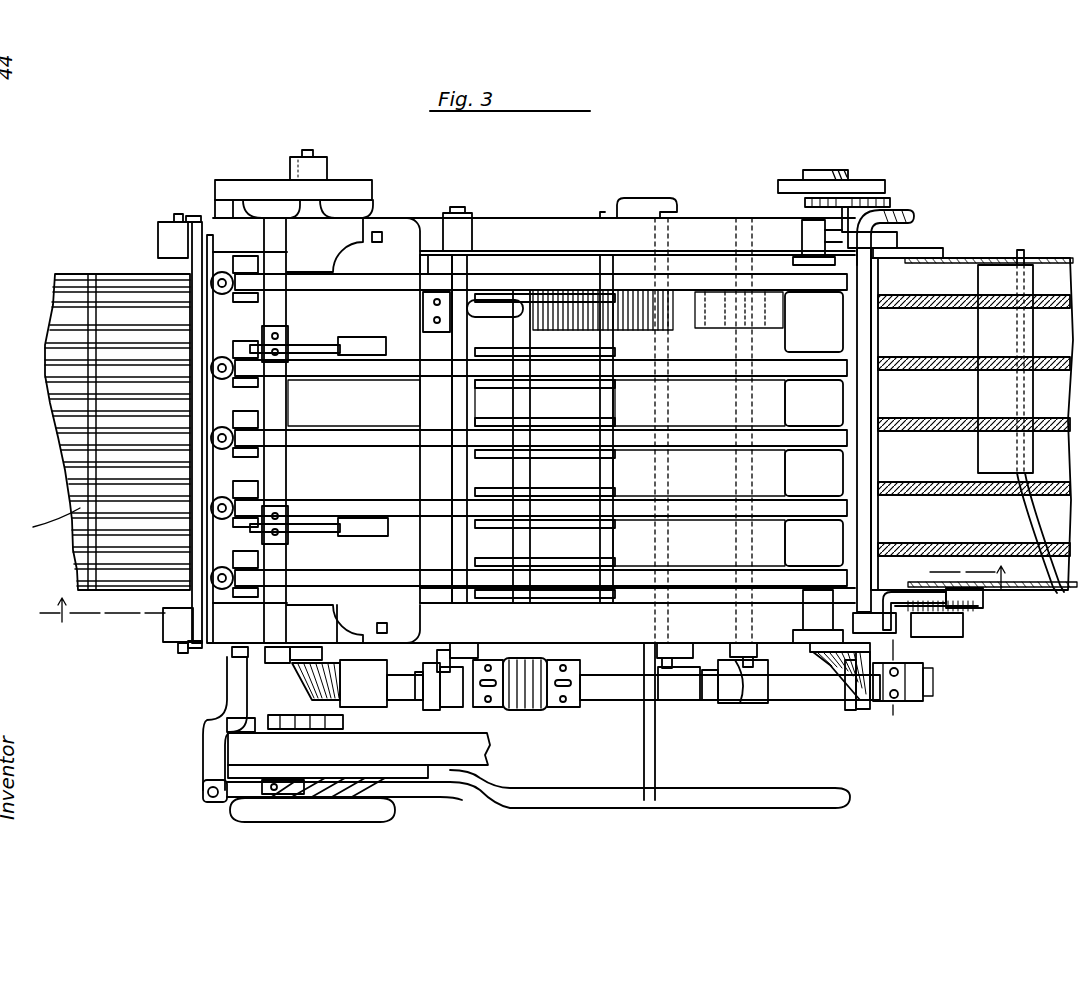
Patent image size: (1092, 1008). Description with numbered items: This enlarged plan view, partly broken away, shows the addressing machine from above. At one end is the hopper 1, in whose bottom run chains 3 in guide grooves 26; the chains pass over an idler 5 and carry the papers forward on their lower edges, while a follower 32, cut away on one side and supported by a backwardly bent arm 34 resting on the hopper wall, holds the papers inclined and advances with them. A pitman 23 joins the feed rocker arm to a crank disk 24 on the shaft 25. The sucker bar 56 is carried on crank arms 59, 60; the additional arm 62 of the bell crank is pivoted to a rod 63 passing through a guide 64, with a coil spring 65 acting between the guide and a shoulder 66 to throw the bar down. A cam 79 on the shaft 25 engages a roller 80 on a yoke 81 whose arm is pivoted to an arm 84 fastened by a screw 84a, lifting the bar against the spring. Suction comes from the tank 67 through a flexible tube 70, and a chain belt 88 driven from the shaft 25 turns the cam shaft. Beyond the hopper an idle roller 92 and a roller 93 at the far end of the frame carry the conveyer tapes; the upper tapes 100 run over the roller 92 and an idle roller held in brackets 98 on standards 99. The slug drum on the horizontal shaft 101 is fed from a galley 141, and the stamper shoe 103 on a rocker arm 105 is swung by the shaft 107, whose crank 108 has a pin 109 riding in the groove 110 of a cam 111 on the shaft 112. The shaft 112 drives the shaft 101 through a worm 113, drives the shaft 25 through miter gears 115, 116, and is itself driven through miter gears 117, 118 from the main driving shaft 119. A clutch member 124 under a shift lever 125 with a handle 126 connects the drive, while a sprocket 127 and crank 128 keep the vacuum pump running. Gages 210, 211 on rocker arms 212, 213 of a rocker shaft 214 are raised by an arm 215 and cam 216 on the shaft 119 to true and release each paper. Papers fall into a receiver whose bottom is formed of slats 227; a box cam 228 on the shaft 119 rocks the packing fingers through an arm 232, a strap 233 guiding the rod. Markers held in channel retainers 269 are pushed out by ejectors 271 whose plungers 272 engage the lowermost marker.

The hopper 1 is at (1024, 590).
The chains 3 is at (898, 493).
The idler 5 is at (515, 587).
The pitman 23 is at (820, 172).
The crank disk 24 is at (870, 187).
The shaft 25 is at (842, 190).
The guide grooves 26 is at (902, 362).
The follower 32 is at (985, 328).
The arm 34 is at (1020, 256).
The hollow bar 56 is at (862, 410).
The crank arm 59 is at (898, 240).
The crank arm 60 is at (878, 612).
The additional arm 62 is at (905, 250).
The rod 63 is at (980, 615).
The guide 64 is at (992, 592).
The coil spring 65 is at (947, 640).
The shoulder 66 is at (939, 614).
The tank 67 is at (195, 322).
The flexible tube 70 is at (890, 236).
The cam 79 is at (815, 644).
The anti-friction roller 80 is at (852, 668).
The yoke 81 is at (832, 642).
The arm 84 is at (890, 660).
The screw 84a is at (878, 650).
The chain belt 88 is at (895, 206).
The idle roller 92 is at (797, 403).
The roller 93 is at (330, 458).
The brackets 98 is at (222, 438).
The standards 99 is at (222, 283).
The tapes 100 is at (505, 285).
The horizontal shaft 101 is at (525, 405).
The shoe 103 is at (540, 300).
The rocker arm 105 is at (482, 305).
The shaft 107 is at (458, 208).
The crank 108 is at (463, 650).
The crank pin 109 is at (444, 664).
The cam groove 110 is at (446, 704).
The cam 111 is at (430, 706).
The horizontal shaft 112 is at (600, 690).
The worm 113 is at (526, 710).
The miter gear 115 is at (860, 710).
The miter gear 116 is at (838, 668).
The miter gear 117 is at (330, 686).
The miter gear 118 is at (298, 672).
The main driving shaft 119 is at (316, 705).
The clutch member 124 is at (250, 780).
The shift lever 125 is at (398, 795).
The handle 126 is at (644, 208).
The sprocket 127 is at (236, 728).
The crank 128 is at (230, 718).
The galley 141 is at (765, 232).
The gage 210 is at (345, 337).
The gage 211 is at (343, 516).
The rocker arm 212 is at (284, 345).
The rocker arm 213 is at (306, 522).
The rocker shaft 214 is at (284, 420).
The arm 215 is at (268, 655).
The cam 216 is at (334, 660).
The slats 227 is at (40, 523).
The cam 228 is at (372, 192).
The arm 232 is at (222, 180).
The strap 233 is at (322, 164).
The retainers 269 is at (193, 220).
The ejectors 271 is at (178, 218).
The plunger 272 is at (180, 236).